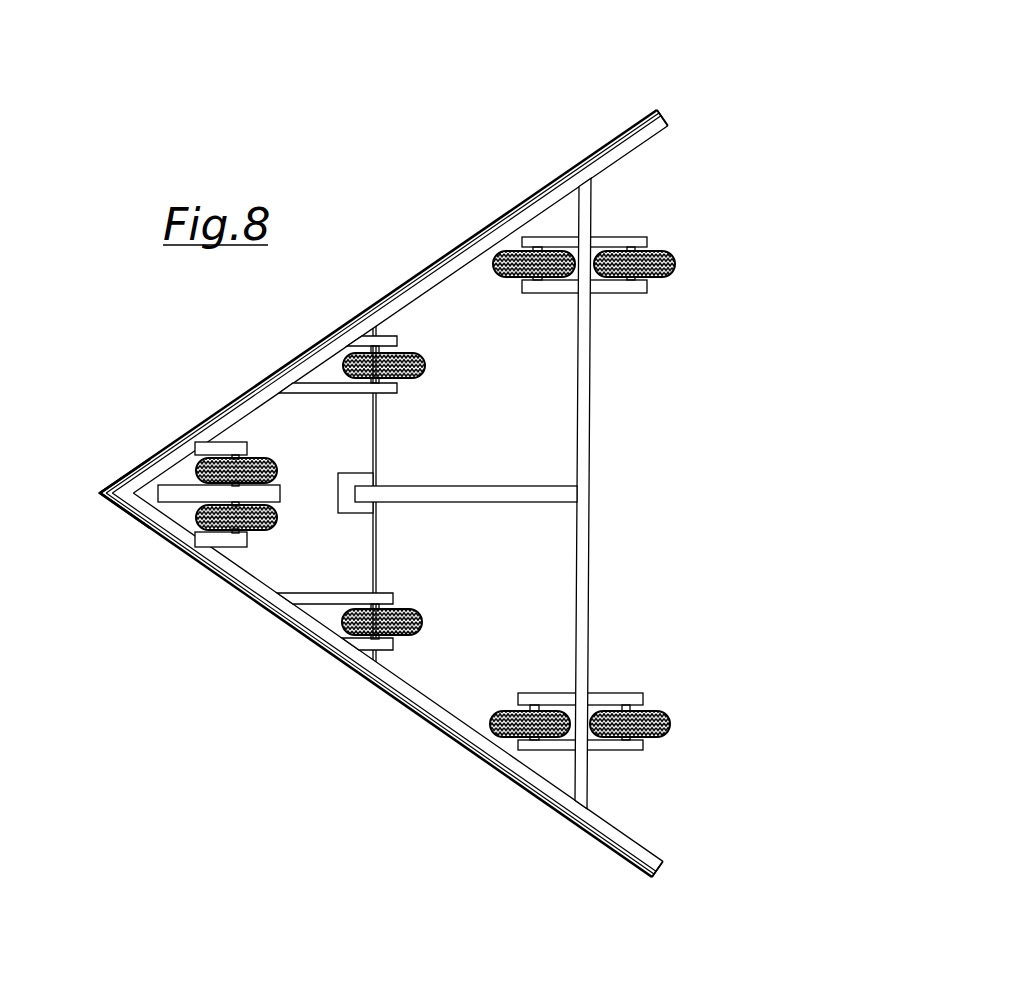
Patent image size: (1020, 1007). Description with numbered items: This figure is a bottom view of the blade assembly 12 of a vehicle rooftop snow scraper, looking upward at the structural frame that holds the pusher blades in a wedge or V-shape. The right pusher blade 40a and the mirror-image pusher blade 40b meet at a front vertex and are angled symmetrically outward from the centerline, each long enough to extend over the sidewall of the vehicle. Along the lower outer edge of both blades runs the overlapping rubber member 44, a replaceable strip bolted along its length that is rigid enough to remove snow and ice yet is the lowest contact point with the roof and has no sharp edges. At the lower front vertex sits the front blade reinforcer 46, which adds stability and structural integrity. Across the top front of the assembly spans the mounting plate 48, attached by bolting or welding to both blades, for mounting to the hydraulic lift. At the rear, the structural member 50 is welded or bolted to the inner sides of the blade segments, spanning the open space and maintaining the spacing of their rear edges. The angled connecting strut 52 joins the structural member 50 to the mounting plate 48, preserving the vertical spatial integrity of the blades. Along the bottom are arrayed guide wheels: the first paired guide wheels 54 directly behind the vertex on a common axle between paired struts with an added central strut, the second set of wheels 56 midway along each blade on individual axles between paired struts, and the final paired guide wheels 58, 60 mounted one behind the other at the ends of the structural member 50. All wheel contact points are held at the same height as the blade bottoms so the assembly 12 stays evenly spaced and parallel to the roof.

The blade assembly 12 is at (390, 501).
The pusher blade 40a is at (668, 124).
The mirror-image pusher blade 40b is at (652, 874).
The overlapping rubber member 44 is at (527, 203).
The front blade reinforcer 46 is at (140, 463).
The mounting plate 48 is at (368, 452).
The structural member 50 is at (590, 398).
The angled connecting strut 52 is at (557, 497).
The paired guide wheels 54 is at (256, 457).
The second set of wheels 56 is at (420, 355).
The paired guide wheels 58 is at (670, 720).
The paired guide wheels 60 is at (674, 256).